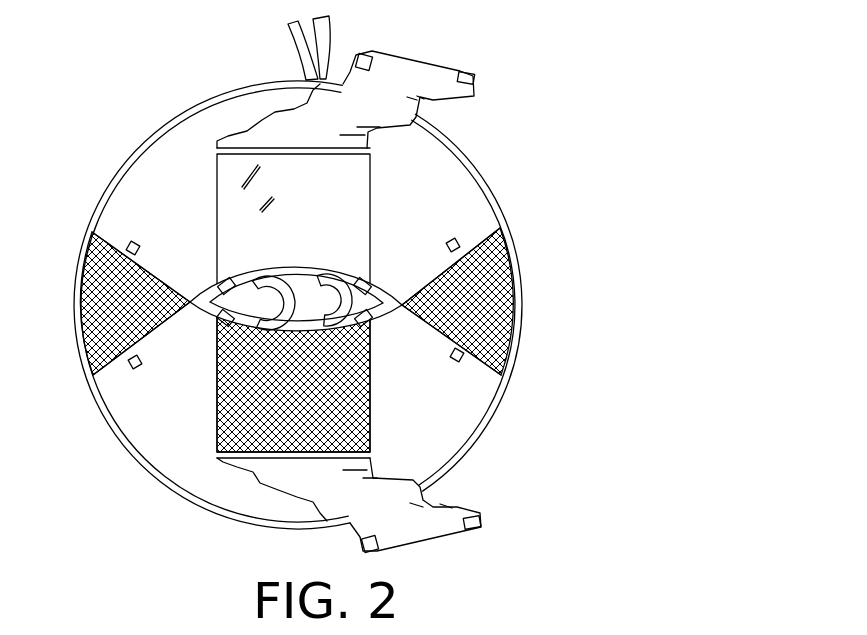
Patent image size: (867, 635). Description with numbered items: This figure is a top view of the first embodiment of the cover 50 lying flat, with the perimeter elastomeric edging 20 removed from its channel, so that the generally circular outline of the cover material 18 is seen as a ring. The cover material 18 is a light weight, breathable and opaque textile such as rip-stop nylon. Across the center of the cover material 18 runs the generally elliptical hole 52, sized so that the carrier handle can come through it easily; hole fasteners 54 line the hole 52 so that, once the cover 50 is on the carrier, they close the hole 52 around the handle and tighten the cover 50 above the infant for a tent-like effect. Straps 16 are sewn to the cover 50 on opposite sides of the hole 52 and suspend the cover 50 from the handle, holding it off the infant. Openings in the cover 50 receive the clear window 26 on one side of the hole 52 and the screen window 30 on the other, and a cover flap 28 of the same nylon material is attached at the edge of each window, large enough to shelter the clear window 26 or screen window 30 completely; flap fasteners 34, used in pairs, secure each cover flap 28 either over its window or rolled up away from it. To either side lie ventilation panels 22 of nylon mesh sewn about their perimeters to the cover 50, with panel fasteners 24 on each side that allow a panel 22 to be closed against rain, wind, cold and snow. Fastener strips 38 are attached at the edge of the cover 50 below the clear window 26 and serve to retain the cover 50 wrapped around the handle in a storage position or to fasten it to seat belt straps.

The straps 16 is at (338, 274).
The cover material 18 is at (192, 125).
The elastomeric edging 20 is at (222, 508).
The ventilation panel 22 is at (88, 318).
The panel fasteners 24 is at (447, 248).
The clear window 26 is at (372, 190).
The cover flap 28 is at (425, 78).
The screen window 30 is at (233, 422).
The flap fasteners 34 is at (476, 80).
The fastener strips 38 is at (292, 33).
The cover 50 is at (190, 213).
The hole 52 is at (254, 290).
The hole fasteners 54 is at (214, 292).